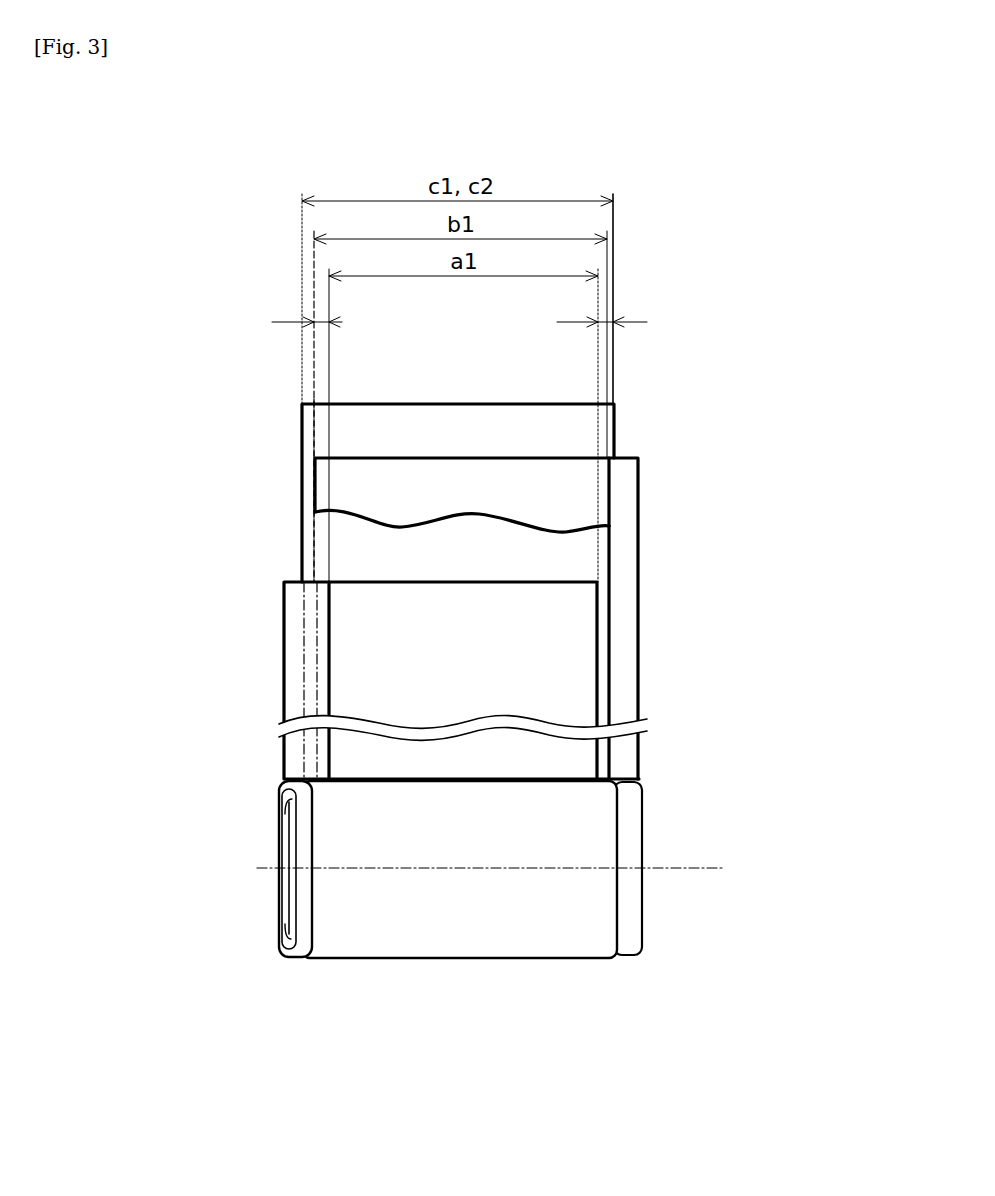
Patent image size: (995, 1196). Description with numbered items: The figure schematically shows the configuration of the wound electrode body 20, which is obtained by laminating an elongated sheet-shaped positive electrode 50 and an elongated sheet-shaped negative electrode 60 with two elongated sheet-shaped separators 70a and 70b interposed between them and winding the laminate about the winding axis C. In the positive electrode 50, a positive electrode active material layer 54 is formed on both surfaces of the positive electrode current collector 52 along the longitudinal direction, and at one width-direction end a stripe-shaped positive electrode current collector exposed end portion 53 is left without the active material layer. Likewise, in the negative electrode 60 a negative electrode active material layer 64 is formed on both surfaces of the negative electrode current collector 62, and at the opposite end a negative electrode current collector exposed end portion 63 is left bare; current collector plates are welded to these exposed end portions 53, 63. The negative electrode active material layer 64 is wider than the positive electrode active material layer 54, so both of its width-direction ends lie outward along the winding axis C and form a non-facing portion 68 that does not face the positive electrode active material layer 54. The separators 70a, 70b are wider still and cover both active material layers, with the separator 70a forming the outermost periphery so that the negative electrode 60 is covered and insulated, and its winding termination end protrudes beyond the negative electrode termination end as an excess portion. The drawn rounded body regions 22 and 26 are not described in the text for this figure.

The wound electrode body 20 is at (460, 906).
The main body 22 is at (378, 960).
The side portion 26 is at (578, 888).
The positive electrode 50 is at (405, 712).
The positive electrode current collector 52 is at (450, 583).
The positive electrode current collector exposed end portion 53 is at (298, 695).
The positive electrode active material layer 54 is at (360, 675).
The negative electrode 60 is at (530, 612).
The negative electrode current collector 62 is at (450, 458).
The negative electrode current collector exposed end portion 63 is at (625, 513).
The negative electrode active material layer 64 is at (548, 475).
The positive electrode active material layer non-facing portion 68 is at (314, 321).
The separator 70a is at (302, 427).
The separator 70b is at (310, 556).
The winding axis C is at (715, 869).